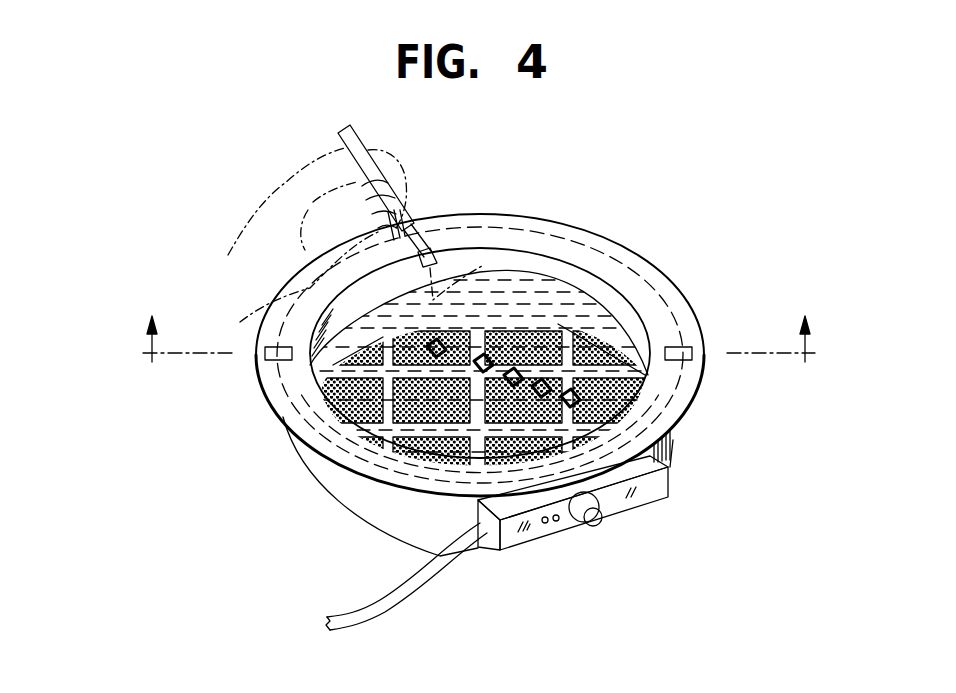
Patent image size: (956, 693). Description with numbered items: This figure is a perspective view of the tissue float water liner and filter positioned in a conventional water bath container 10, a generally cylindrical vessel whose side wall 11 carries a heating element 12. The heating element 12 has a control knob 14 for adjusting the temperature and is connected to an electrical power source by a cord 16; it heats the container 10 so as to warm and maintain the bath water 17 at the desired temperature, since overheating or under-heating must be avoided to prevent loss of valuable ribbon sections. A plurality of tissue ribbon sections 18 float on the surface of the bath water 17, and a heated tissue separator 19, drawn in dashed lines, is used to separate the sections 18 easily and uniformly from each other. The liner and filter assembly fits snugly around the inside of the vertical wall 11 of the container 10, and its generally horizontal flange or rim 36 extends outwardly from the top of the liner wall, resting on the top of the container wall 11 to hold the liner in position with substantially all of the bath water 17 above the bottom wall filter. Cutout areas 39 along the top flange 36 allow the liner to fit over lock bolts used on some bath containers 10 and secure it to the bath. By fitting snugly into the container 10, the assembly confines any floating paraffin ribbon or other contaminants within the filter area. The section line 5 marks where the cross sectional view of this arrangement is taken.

The section line 5- 5 is at (479, 319).
The tissue float water bath container 10 is at (690, 443).
The side wall 11 is at (332, 490).
The heating element 12 is at (652, 488).
The control knob 14 is at (596, 523).
The cord 16 is at (410, 588).
The bath water 17 is at (610, 313).
The tissue ribbon sections 18 is at (495, 315).
The heated tissue separator 19 is at (343, 140).
The flange 36 is at (620, 250).
The cutout areas 39 is at (267, 357).